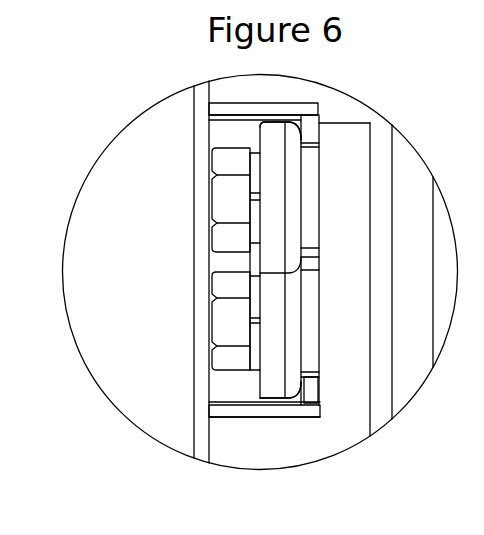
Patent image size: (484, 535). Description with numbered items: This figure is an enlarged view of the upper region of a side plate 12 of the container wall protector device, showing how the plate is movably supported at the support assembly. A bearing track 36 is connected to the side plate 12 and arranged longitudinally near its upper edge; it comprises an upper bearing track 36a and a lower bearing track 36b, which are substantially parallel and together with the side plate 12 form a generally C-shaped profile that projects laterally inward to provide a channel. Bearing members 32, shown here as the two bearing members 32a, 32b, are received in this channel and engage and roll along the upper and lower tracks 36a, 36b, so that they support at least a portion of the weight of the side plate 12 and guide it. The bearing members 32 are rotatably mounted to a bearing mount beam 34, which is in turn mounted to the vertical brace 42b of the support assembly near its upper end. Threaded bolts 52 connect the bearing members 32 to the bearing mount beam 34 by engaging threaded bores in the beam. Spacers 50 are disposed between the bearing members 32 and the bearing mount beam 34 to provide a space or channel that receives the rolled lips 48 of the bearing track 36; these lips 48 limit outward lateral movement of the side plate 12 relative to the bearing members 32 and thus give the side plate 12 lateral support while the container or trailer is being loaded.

The side plate 12 is at (194, 138).
The bearing member 32 is at (278, 178).
The bearing member 32a is at (278, 203).
The bearing member 32b is at (278, 313).
The bearing mount beam 34 is at (358, 274).
The bearing track 36 is at (263, 103).
The upper bearing track 36a is at (290, 103).
The lower bearing track 36b is at (265, 417).
The vertical brace 42b is at (433, 276).
The lip 48 is at (318, 117).
The spacer 50 is at (310, 161).
The bolt 52 is at (220, 195).